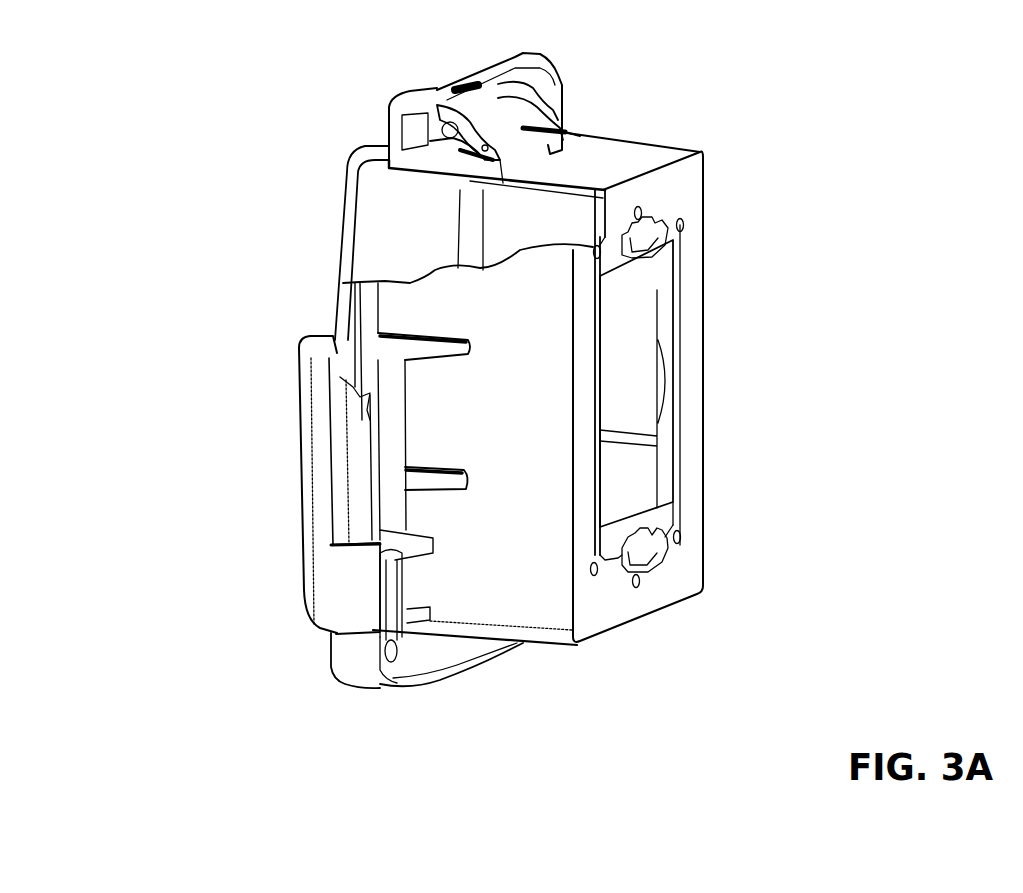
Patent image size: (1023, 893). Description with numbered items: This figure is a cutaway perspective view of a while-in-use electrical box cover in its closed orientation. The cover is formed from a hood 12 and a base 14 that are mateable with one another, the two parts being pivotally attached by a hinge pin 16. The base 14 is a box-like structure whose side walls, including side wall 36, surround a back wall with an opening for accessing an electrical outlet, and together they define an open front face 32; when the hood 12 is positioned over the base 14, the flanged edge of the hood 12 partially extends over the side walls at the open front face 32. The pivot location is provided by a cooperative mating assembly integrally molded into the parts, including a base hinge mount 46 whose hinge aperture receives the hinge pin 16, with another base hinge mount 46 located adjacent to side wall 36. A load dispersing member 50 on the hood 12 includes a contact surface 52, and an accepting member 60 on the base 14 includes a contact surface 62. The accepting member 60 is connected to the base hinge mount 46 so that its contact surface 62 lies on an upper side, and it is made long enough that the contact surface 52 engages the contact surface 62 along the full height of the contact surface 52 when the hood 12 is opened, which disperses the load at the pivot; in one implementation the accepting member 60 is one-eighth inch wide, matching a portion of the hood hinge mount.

The hood 12 is at (293, 397).
The base 14 is at (665, 612).
The hinge pin 16 is at (405, 117).
The open front face 32 is at (370, 240).
The side wall 36 is at (522, 587).
The base hinge mount 46 is at (458, 150).
The load dispersing member 50 is at (492, 58).
The contact surface 52 is at (545, 97).
The accepting member 60 is at (440, 160).
The contact surface 62 is at (565, 134).